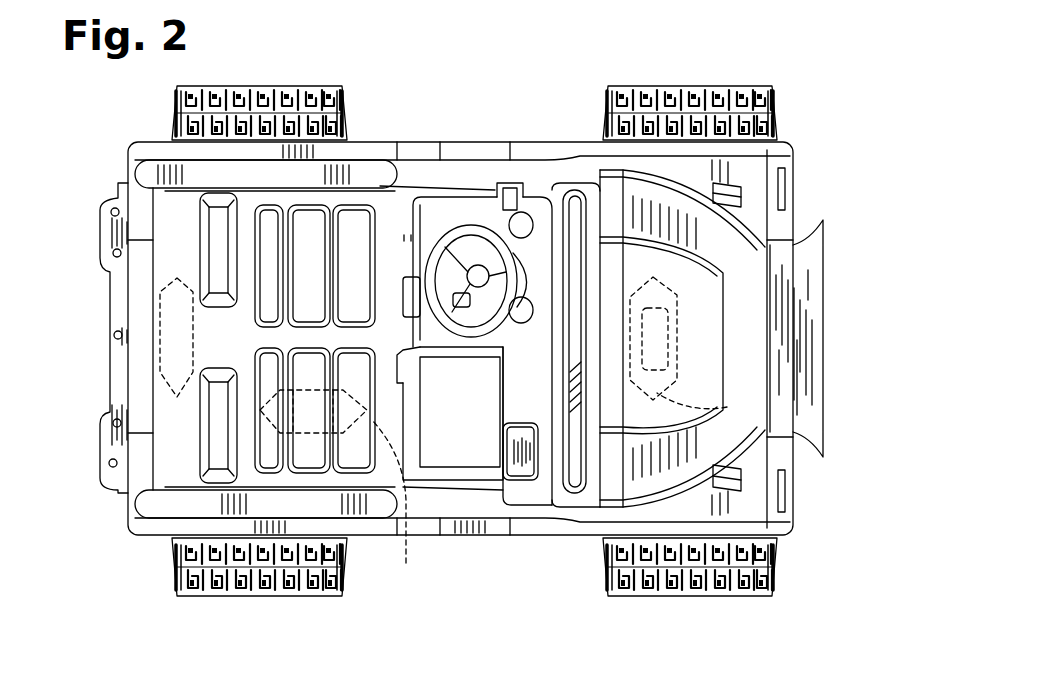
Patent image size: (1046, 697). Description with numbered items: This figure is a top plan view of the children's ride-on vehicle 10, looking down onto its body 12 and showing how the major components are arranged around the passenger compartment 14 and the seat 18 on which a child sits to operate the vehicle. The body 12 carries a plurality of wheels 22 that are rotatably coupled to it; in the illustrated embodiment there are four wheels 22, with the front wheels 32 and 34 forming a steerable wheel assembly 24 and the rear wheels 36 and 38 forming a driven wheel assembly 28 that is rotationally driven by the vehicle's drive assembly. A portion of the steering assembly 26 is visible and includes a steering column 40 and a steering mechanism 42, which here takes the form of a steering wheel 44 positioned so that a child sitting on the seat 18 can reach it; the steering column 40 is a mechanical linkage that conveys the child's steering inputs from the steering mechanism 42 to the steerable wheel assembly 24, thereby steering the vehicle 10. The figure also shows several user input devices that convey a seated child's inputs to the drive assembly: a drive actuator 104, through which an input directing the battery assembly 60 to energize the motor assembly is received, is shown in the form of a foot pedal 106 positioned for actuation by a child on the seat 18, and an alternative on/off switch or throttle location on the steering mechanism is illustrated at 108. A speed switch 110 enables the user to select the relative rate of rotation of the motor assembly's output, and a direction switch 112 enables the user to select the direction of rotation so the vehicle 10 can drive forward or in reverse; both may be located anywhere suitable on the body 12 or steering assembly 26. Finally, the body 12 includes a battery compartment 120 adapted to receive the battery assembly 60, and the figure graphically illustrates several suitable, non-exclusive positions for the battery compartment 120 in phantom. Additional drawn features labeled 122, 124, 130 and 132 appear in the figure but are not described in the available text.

The vehicle 10 is at (872, 191).
The body 12 is at (832, 292).
The passenger compartment 14 is at (462, 182).
The seat 18 is at (218, 218).
The wheels 22 is at (718, 339).
The steerable wheel assembly 24 is at (735, 82).
The steering assembly 26 is at (540, 296).
The driven wheel assembly 28 is at (269, 340).
The front wheel 32 is at (643, 87).
The front wheel 34 is at (648, 596).
The rear wheel 36 is at (210, 87).
The rear wheel 38 is at (214, 596).
The steering column 40 is at (525, 277).
The steering mechanism 42 is at (438, 337).
The steering wheel 44 is at (480, 352).
The battery assembly 60 is at (672, 323).
The drive actuator 104 is at (446, 246).
The foot pedal 106 is at (452, 294).
The on/off switch or throttle 108 is at (445, 238).
The speed switch 110 is at (509, 183).
The direction switch 112 is at (517, 183).
The battery compartment 120 is at (168, 392).
The seat switch 122 is at (656, 302).
The hidden actuator 124 is at (686, 368).
The seat back 130 is at (747, 414).
The hinge 132 is at (730, 424).